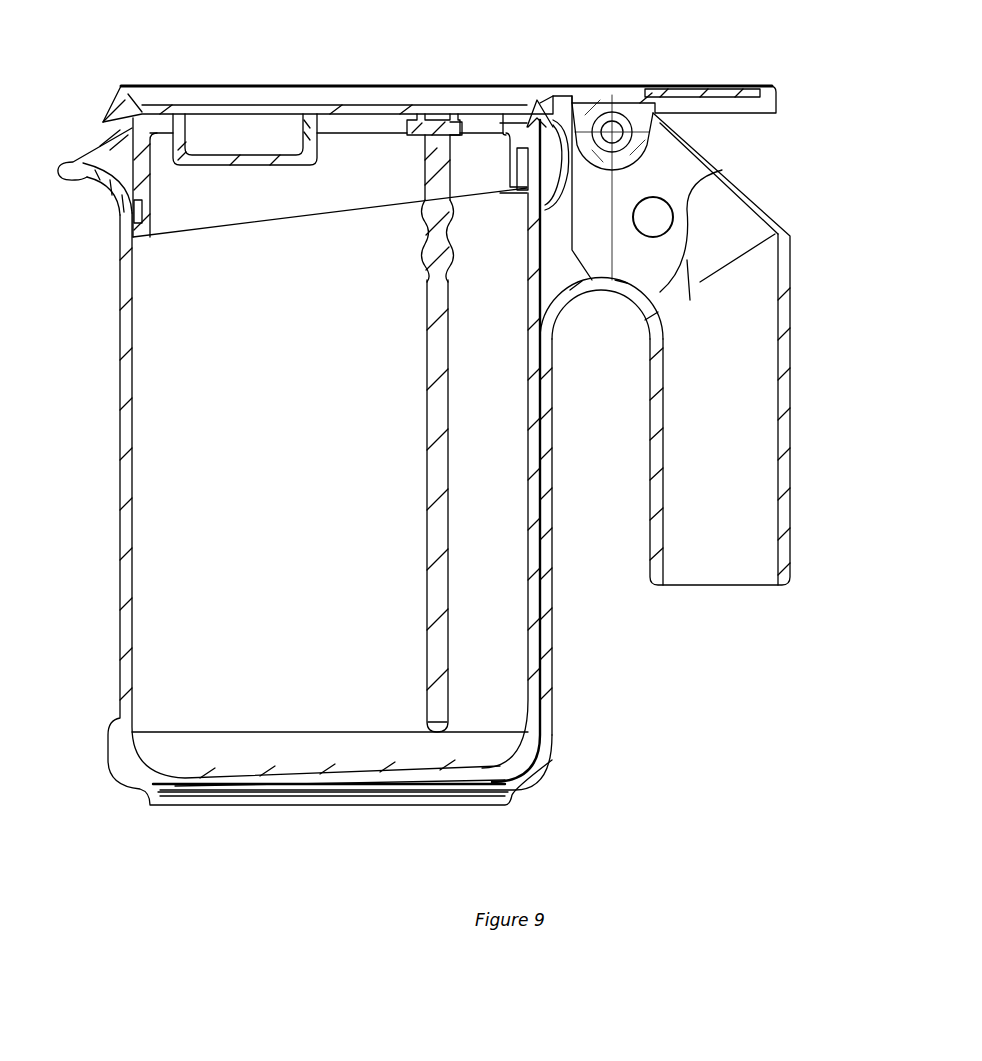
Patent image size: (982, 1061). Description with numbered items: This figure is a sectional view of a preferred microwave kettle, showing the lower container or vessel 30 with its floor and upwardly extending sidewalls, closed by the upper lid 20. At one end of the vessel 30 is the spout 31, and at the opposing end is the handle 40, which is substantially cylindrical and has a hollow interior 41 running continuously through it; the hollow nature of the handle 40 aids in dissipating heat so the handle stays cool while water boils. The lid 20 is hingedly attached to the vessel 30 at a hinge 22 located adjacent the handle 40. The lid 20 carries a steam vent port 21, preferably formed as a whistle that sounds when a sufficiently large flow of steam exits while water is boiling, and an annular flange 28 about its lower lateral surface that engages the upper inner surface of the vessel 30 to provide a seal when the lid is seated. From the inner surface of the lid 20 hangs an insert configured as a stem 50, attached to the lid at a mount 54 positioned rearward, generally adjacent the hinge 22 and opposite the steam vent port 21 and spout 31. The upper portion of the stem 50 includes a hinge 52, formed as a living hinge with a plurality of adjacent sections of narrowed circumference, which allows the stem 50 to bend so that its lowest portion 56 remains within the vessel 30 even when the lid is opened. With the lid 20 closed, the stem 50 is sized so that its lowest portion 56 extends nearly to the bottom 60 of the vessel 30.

The lid 20 is at (380, 106).
The steam vent port 21 is at (240, 118).
The hinge 22 is at (605, 110).
The annular flange 28 is at (132, 222).
The vessel 30 is at (165, 540).
The spout 31 is at (60, 180).
The handle 40 is at (783, 470).
The hollow interior 41 is at (708, 538).
The stem 50 is at (442, 622).
The hinge 52 is at (423, 238).
The mount 54 is at (412, 112).
The lowest portion 56 is at (460, 125).
The bottom 60 is at (280, 768).